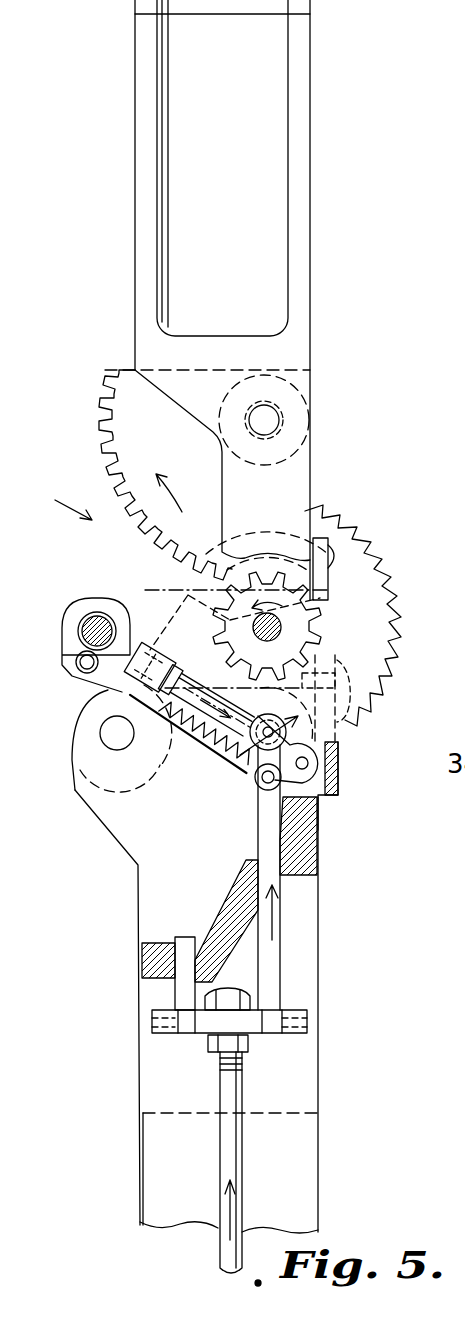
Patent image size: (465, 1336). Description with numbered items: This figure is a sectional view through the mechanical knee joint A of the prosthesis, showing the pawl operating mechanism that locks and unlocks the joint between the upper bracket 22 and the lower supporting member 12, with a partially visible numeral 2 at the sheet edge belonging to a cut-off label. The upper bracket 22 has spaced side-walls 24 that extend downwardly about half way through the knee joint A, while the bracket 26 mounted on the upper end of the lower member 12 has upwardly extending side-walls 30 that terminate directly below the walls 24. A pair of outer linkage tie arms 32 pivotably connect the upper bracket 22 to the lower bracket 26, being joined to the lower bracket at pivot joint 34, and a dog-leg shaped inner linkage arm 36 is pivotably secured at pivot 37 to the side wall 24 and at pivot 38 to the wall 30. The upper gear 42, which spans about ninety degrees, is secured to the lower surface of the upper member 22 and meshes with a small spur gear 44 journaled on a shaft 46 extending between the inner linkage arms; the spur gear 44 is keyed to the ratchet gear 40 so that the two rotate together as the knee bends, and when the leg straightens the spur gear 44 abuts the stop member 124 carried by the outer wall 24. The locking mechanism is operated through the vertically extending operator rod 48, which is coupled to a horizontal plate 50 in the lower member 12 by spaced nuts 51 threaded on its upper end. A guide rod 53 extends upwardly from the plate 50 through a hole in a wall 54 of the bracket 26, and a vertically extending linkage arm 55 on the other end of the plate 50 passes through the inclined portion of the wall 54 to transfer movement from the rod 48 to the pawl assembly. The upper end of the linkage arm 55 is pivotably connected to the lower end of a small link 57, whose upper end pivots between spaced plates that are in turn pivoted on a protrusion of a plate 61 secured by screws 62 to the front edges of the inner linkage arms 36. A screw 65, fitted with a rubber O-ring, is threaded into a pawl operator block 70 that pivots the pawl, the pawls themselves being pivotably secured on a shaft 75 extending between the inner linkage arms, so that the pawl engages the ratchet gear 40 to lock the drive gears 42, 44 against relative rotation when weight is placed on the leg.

The lower supporting member 12 is at (310, 1180).
The upper bracket 22 is at (302, 229).
The side-walls 24 is at (302, 468).
The bracket 26 is at (308, 988).
The side-walls 30 is at (122, 830).
The pivot joint 34 is at (112, 738).
The pivot 38 is at (240, 755).
The ratchet gear 40 is at (375, 595).
The upper gear 42 is at (128, 405).
The spur gear 44 is at (215, 605).
The shaft 46 is at (302, 632).
The operator rod 48 is at (238, 1132).
The horizontal plate 50 is at (307, 1027).
The nut 51 is at (235, 990).
The guide rod 53 is at (178, 992).
The wall 54 is at (250, 872).
The linkage arm 55 is at (280, 912).
The link 57 is at (260, 765).
The plate 61 is at (335, 790).
The screws 62 is at (342, 722).
The screw 65 is at (171, 745).
The pawl operator block 70 is at (100, 675).
The shaft 75 is at (100, 628).
The stop member 124 is at (320, 583).
The knee joint A is at (60, 504).
The pivot 37 is at (452, 382).
The inner linkage arm 36 is at (458, 624).
The outer linkage tie arm 32 is at (458, 672).
The element 2 is at (462, 332).